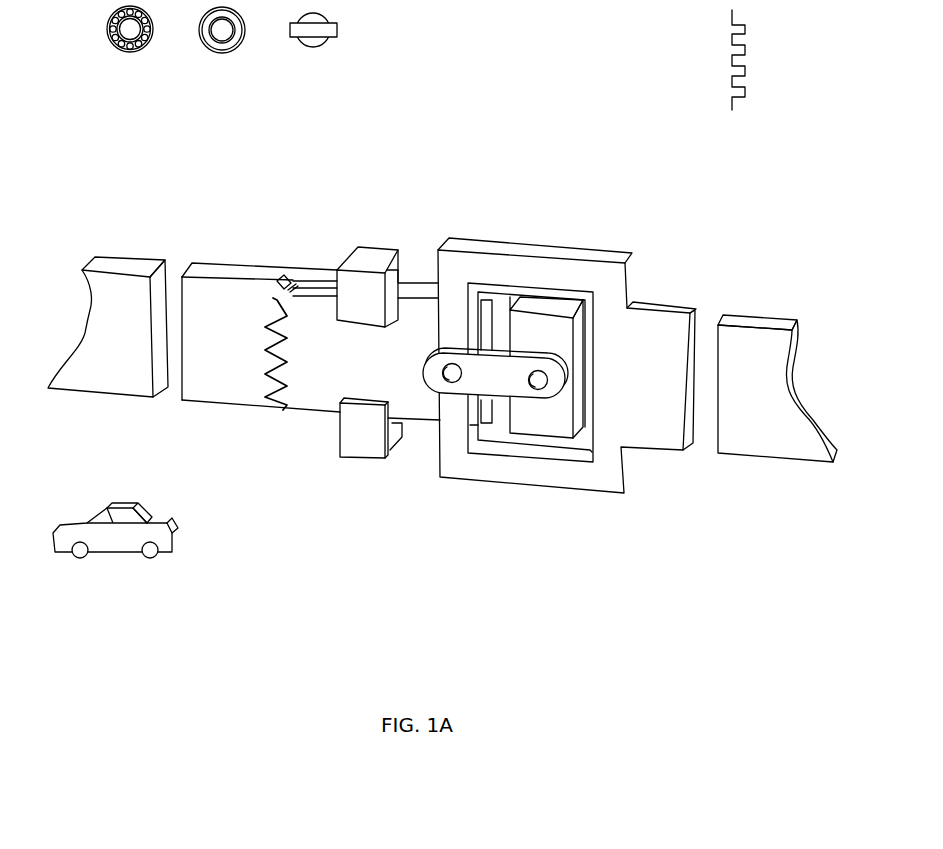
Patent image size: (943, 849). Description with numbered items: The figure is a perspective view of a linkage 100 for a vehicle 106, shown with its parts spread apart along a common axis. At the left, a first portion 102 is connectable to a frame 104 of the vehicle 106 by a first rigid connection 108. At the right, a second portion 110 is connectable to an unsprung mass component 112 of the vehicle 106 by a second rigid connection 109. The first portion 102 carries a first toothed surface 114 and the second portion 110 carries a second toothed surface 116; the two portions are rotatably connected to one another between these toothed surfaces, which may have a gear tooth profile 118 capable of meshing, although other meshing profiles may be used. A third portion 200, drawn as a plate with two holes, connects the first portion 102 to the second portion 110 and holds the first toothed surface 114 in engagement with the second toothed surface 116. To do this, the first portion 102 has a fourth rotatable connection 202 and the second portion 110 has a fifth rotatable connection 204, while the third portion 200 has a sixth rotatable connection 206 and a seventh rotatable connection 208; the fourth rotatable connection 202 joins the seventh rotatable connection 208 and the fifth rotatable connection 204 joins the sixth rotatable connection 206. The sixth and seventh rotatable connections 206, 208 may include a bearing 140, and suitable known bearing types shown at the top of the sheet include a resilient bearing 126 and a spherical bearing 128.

The linkage 100 is at (455, 210).
The first portion 102 is at (225, 302).
The frame 104 is at (112, 288).
The vehicle 106 is at (113, 552).
The first rigid connection 108 is at (183, 398).
The second rigid connection 109 is at (687, 442).
The second portion 110 is at (580, 275).
The unsprung mass component 112 is at (753, 348).
The first toothed surface 114 is at (285, 278).
The second toothed surface 116 is at (293, 287).
The gear tooth profile 118 is at (737, 53).
The resilient bearing 126 is at (218, 46).
The spherical bearing 128 is at (310, 42).
The bearing 140 is at (118, 46).
The third portion 200 is at (480, 378).
The fourth rotatable connection 202 is at (537, 373).
The fifth rotatable connection 204 is at (453, 367).
The sixth rotatable connection 206 is at (443, 381).
The seventh rotatable connection 208 is at (537, 390).